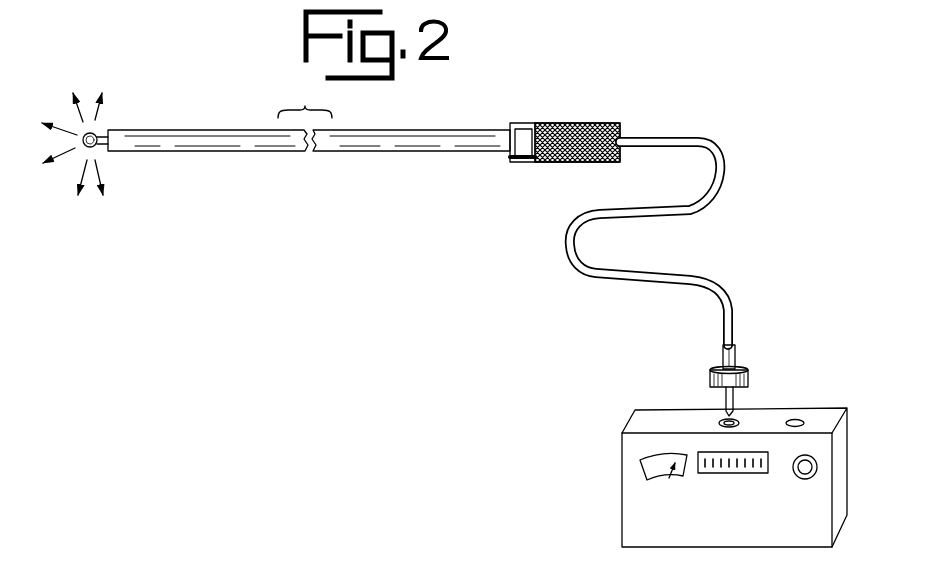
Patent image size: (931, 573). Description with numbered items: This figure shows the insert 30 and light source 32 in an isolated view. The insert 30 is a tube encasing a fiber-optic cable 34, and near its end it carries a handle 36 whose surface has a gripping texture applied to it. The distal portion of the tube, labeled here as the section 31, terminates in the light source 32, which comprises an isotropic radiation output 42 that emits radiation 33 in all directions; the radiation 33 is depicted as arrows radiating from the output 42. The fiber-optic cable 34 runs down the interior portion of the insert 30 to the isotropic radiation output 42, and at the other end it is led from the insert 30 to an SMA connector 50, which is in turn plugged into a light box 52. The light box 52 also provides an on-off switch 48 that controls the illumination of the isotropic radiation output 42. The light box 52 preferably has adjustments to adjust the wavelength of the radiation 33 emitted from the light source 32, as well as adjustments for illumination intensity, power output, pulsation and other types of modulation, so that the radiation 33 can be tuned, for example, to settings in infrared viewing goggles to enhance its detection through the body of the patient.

The insert 30 is at (377, 137).
The distal shaft section 31 is at (189, 117).
The light source 32 is at (134, 88).
The radiation 33 is at (105, 173).
The fiber-optic cable 34 is at (708, 138).
The handle 36 is at (601, 117).
The isotropic radiation output 42 is at (95, 134).
The on-off switch 48 is at (801, 412).
The SMA connector 50 is at (733, 352).
The light box 52 is at (687, 447).